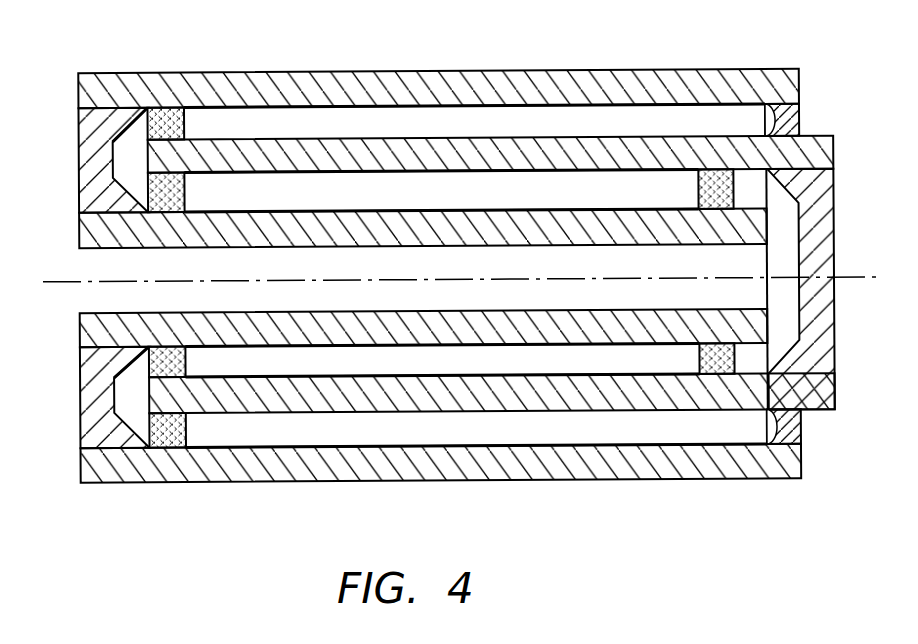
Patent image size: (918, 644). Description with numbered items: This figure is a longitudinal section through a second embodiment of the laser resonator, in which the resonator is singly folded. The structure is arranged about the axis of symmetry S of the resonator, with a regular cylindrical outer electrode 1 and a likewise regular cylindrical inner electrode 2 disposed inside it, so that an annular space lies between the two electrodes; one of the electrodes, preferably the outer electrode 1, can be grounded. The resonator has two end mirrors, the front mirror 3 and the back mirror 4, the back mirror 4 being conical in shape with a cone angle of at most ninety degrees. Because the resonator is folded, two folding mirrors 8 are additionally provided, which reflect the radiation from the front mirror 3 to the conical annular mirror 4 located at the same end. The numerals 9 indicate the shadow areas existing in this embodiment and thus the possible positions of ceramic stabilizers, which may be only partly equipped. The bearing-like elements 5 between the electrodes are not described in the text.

The outer electrode 1 is at (547, 85).
The inner electrode 2 is at (288, 222).
The end mirror (front mirror) 3 is at (797, 118).
The end mirror (back mirror) 4 is at (812, 227).
The bearing 5 is at (186, 125).
The folding mirror 8 is at (87, 155).
The shadow area 9 is at (208, 112).
The axis of symmetry S is at (450, 286).